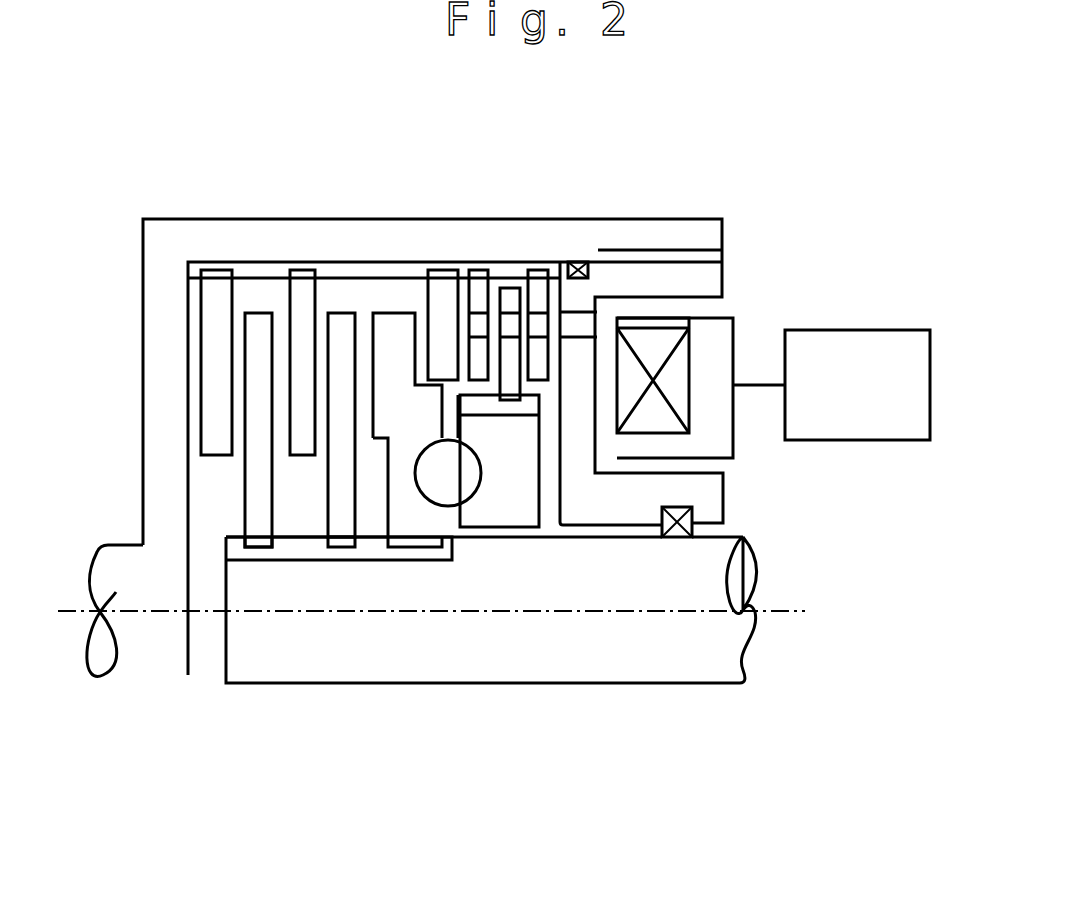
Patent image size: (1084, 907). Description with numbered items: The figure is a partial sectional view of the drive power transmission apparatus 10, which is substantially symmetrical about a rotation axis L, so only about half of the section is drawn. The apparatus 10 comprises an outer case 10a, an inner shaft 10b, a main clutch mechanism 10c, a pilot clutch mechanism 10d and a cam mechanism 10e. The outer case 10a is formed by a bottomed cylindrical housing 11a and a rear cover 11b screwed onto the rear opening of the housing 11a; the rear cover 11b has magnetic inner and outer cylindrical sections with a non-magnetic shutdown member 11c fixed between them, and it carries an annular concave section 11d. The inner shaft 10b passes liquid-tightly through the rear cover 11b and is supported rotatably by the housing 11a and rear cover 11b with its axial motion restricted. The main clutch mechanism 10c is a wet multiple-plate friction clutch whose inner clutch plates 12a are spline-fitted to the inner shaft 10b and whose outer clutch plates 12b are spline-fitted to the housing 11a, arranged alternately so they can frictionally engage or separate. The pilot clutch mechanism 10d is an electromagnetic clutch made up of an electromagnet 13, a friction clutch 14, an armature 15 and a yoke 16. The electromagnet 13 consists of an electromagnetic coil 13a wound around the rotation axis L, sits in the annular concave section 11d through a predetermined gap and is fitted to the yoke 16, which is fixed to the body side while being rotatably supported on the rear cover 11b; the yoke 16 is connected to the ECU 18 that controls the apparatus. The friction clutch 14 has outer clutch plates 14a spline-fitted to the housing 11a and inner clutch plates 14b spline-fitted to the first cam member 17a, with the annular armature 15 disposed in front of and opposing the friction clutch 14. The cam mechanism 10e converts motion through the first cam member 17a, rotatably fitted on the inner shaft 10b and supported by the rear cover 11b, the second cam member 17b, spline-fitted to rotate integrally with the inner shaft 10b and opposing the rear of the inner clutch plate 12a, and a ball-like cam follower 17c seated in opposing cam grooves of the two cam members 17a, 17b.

The drive power transmission apparatus 10 is at (792, 143).
The outer case 10a is at (257, 219).
The inner shaft 10b is at (737, 645).
The main clutch mechanism 10c is at (277, 273).
The pilot clutch mechanism 10d is at (523, 272).
The cam mechanism 10e is at (407, 505).
The housing 11a is at (158, 324).
The rear cover 11b is at (705, 517).
The shutdown member 11c is at (577, 323).
The annular concave section 11d is at (708, 297).
The inner clutch plate 12a is at (259, 320).
The outer clutch plate 12b is at (215, 285).
The electromagnet 13 is at (666, 316).
The electromagnetic coil 13a is at (635, 427).
The friction clutch 14 is at (512, 258).
The outer clutch plate 14a is at (477, 283).
The inner clutch plate 14b is at (505, 290).
The armature 15 is at (443, 283).
The yoke 16 is at (713, 352).
The first cam member 17a is at (510, 503).
The second cam member 17b is at (430, 520).
The cam follower 17c is at (462, 490).
The ECU 18 is at (880, 330).
The rotation axis L is at (148, 612).